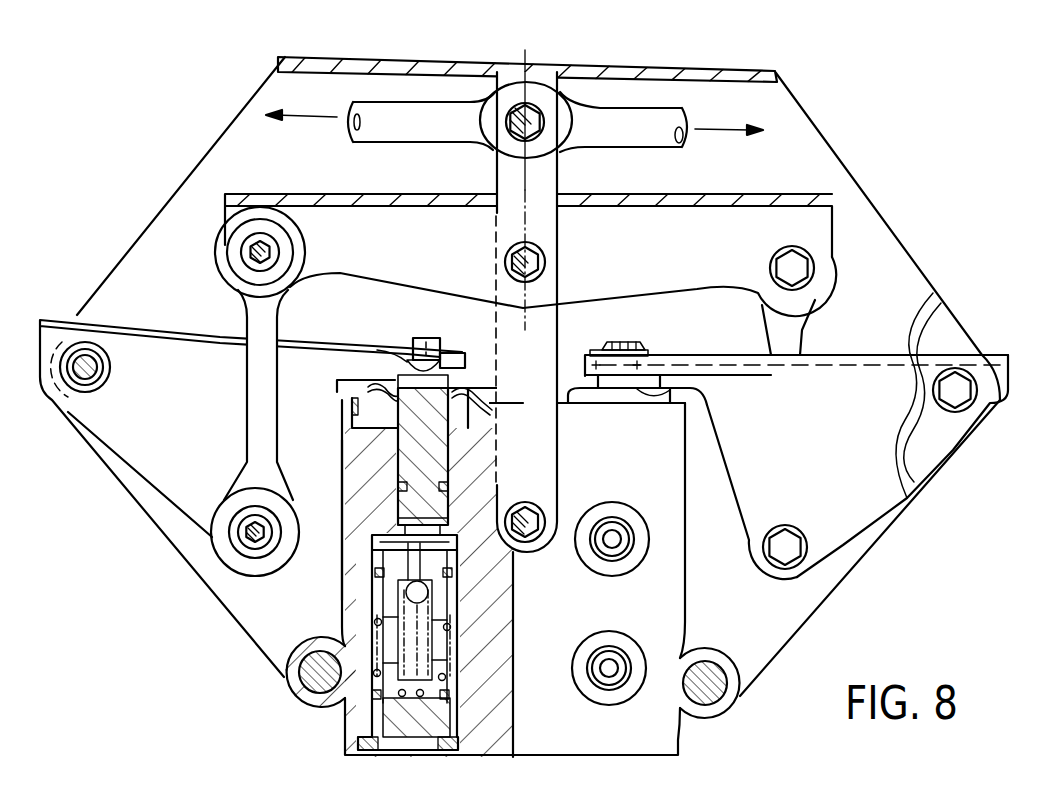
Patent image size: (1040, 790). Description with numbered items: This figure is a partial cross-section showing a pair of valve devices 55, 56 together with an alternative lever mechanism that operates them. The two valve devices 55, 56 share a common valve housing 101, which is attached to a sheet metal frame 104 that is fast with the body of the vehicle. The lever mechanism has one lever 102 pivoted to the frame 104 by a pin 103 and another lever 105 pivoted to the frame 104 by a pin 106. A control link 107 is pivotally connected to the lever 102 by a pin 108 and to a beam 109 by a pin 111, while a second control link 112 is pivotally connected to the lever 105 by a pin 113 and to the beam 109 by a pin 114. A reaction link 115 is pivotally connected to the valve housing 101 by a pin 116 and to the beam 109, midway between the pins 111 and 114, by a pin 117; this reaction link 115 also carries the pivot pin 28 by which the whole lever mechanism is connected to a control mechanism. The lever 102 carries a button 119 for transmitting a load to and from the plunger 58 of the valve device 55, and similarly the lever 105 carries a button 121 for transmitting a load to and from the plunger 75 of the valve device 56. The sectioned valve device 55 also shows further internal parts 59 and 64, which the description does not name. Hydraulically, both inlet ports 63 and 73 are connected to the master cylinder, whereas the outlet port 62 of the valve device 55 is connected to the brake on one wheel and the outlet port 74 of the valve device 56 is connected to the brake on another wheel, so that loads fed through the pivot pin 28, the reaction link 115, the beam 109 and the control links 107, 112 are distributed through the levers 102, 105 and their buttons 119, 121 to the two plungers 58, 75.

The pivot pin 28 is at (570, 136).
The valve device 55 is at (335, 593).
The valve device 56 is at (700, 626).
The plunger 58 is at (398, 465).
The control valve 59 is at (447, 600).
The outlet port 62 is at (383, 552).
The inlet port 63 is at (440, 670).
The closure plug 64 is at (428, 720).
The inlet port 73 is at (613, 666).
The outlet port 74 is at (616, 543).
The plunger 75 is at (598, 374).
The valve housing 101 is at (490, 735).
The lever 102 is at (143, 467).
The pin 103 is at (86, 377).
The sheet metal frame 104 is at (132, 268).
The lever 105 is at (843, 525).
The pin 106 is at (962, 405).
The control link 107 is at (242, 416).
The pin 108 is at (240, 538).
The beam 109 is at (530, 255).
The pin 111 is at (248, 252).
The control link 112 is at (795, 342).
The pin 113 is at (786, 558).
The pin 114 is at (793, 270).
The reaction link 115 is at (548, 212).
The pin 116 is at (520, 523).
The pin 117 is at (548, 263).
The button 119 is at (393, 358).
The button 121 is at (653, 372).